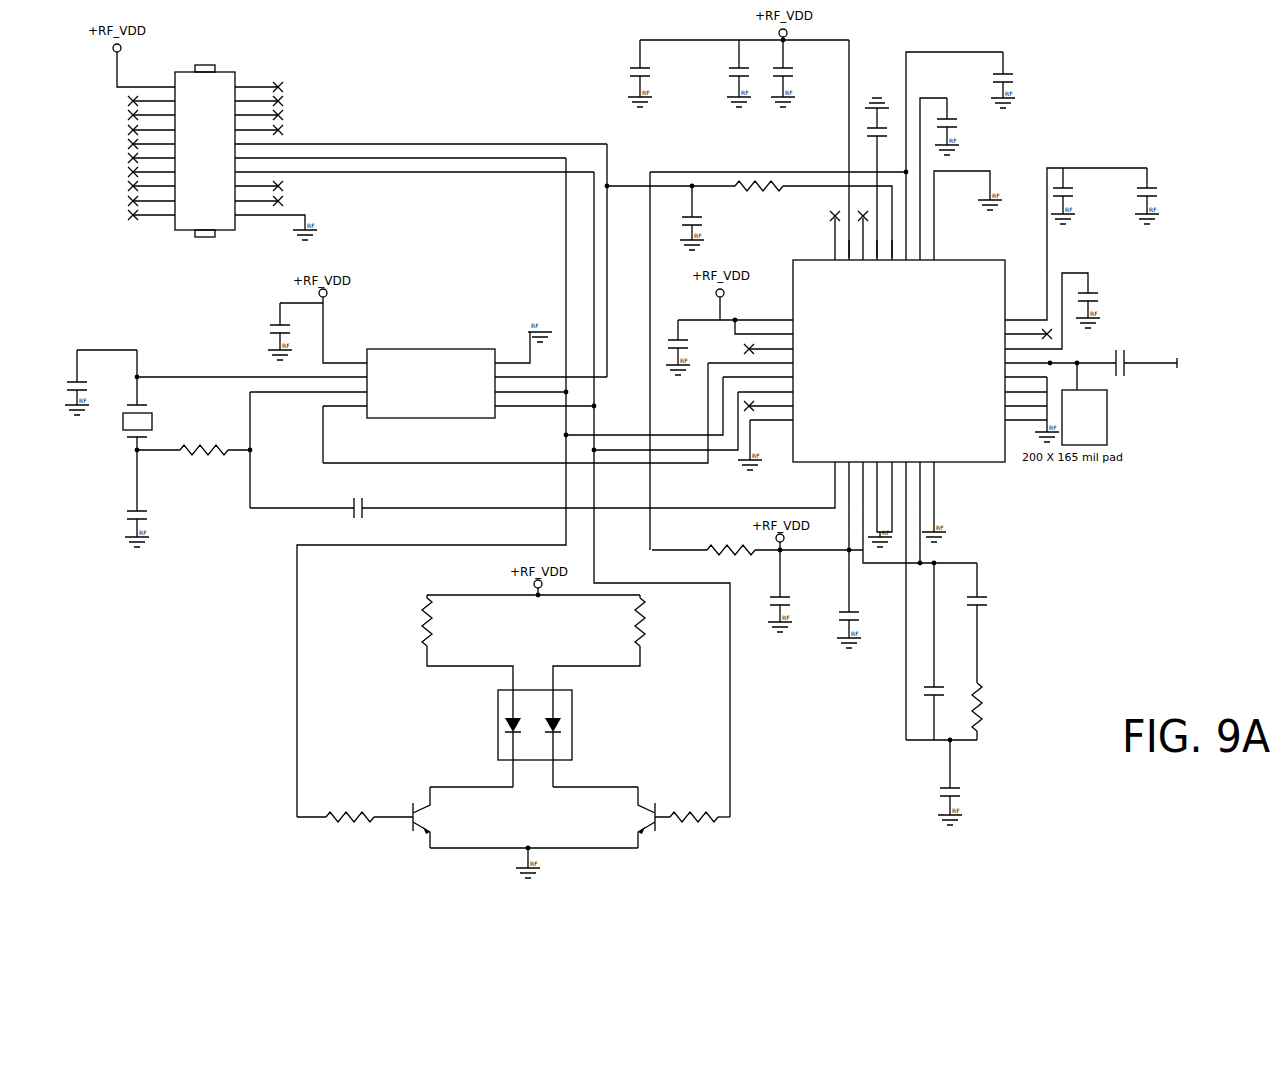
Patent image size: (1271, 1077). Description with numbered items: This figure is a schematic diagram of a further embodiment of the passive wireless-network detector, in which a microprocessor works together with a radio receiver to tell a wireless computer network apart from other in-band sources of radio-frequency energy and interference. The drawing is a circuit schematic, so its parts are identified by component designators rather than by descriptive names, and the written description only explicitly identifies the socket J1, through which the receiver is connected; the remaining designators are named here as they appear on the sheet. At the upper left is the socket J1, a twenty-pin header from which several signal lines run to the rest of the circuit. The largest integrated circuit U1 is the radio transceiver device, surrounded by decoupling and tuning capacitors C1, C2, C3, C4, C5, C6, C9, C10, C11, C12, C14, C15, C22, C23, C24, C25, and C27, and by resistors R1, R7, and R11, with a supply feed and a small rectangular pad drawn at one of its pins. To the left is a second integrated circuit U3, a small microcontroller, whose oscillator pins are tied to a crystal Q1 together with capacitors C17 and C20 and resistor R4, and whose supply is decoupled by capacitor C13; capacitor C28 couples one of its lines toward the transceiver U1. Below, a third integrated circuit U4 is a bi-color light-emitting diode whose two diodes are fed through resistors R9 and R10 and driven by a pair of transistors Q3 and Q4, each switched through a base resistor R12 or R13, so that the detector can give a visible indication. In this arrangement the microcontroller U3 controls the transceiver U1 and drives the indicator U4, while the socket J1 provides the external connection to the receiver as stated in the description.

The socket J1 is at (205, 150).
The .1UF capacitor C1 is at (624, 73).
The 220NF capacitor C2 is at (717, 73).
The 220NF capacitor C3 is at (806, 73).
The 220NF capacitor C4 is at (1025, 80).
The 220NF capacitor C5 is at (969, 126).
The 220NF capacitor C6 is at (845, 178).
The 3.3PF capacitor C9 is at (1081, 196).
The 18PF capacitor C10 is at (1164, 196).
The 100PF capacitor C11 is at (710, 218).
The 220PF capacitor C12 is at (1108, 307).
The 100PF capacitor C13 is at (257, 331).
The 10NF capacitor C14 is at (695, 347).
The 4.7PF capacitor C15 is at (1140, 351).
The 15PF capacitor C17 is at (101, 382).
The 15PF capacitor C20 is at (155, 498).
The 10NF capacitor C22 is at (793, 591).
The 10NF capacitor C23 is at (998, 623).
The 220PF capacitor C24 is at (868, 623).
The 10PF capacitor C25 is at (949, 651).
The 220NF capacitor C27 is at (974, 782).
The 470PF capacitor C28 is at (364, 512).
The 1K resistor R1 is at (758, 196).
The 1K resistor R4 is at (204, 459).
The 10 ohm resistor R7 is at (729, 561).
The 330 ohm resistor R9 is at (467, 642).
The 330 ohm resistor R10 is at (615, 642).
The 820 ohm resistor R11 is at (994, 711).
The 10K resistor R12 is at (337, 835).
The 10K resistor R13 is at (700, 835).
The ML2726 RF transceiver IC U1 is at (894, 346).
The PIC12674 microcontroller U3 is at (431, 382).
The Bi-Color LED U4 is at (566, 733).
The 6.144MHz crystal Q1 is at (169, 419).
The MMBT3904 transistor Q3 is at (437, 817).
The MMBT3904 transistor Q4 is at (616, 817).